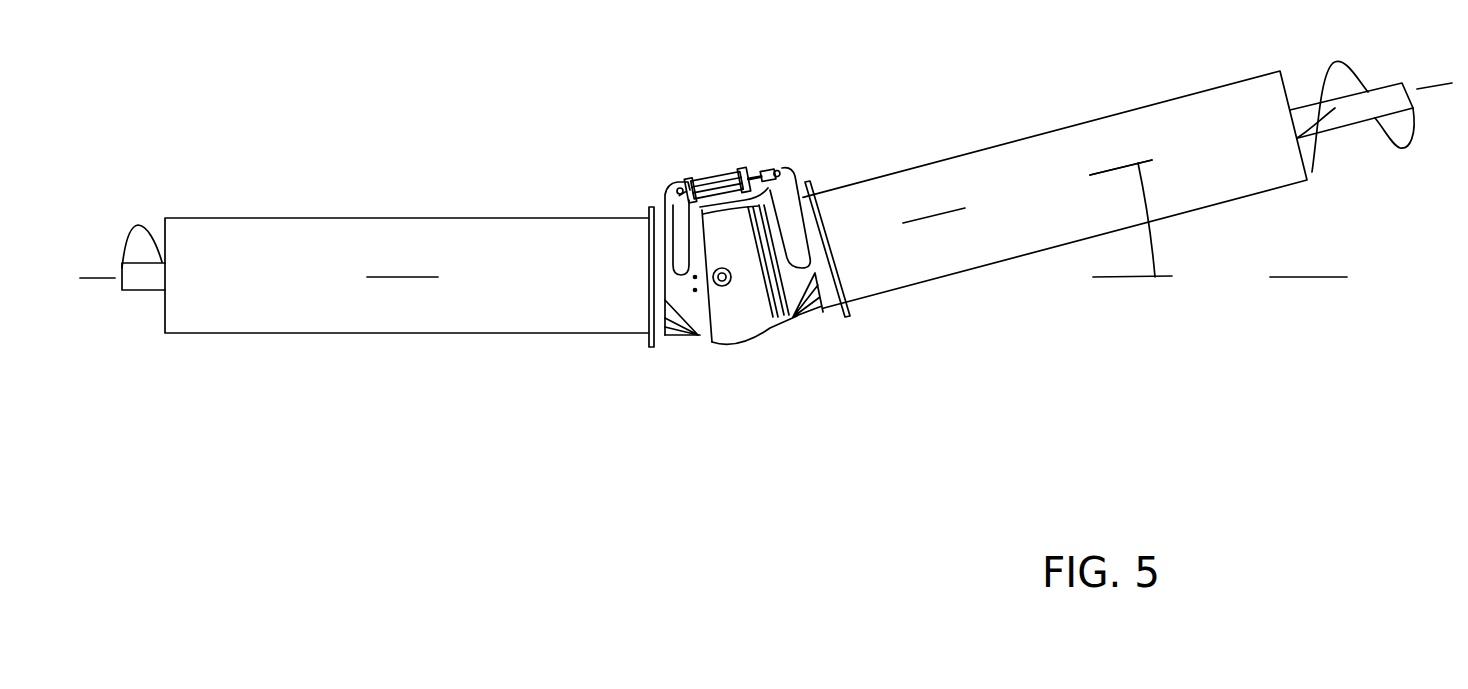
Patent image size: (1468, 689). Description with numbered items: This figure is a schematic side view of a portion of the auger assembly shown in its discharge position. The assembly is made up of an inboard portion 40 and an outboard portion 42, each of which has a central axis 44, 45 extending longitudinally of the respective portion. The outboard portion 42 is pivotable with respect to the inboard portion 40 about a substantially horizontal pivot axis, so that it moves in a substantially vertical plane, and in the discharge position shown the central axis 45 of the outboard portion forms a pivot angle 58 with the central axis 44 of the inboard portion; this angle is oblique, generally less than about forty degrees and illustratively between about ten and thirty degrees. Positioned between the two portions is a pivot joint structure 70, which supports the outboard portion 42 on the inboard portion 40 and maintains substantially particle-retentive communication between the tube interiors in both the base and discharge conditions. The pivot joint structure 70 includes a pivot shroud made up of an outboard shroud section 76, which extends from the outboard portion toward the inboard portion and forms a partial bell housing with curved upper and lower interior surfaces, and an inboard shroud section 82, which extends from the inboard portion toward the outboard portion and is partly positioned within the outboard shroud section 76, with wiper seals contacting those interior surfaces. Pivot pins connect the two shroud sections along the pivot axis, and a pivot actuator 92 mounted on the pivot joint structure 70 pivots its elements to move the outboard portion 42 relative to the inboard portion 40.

The inboard portion 40 is at (536, 333).
The outboard portion 42 is at (950, 280).
The central axis 44 is at (398, 277).
The central axis 45 is at (1110, 167).
The pivot angle 58 is at (1157, 245).
The pivot joint structure 70 is at (757, 128).
The outboard shroud section 76 is at (750, 340).
The inboard shroud section 82 is at (698, 338).
The pivot actuator 92 is at (712, 172).